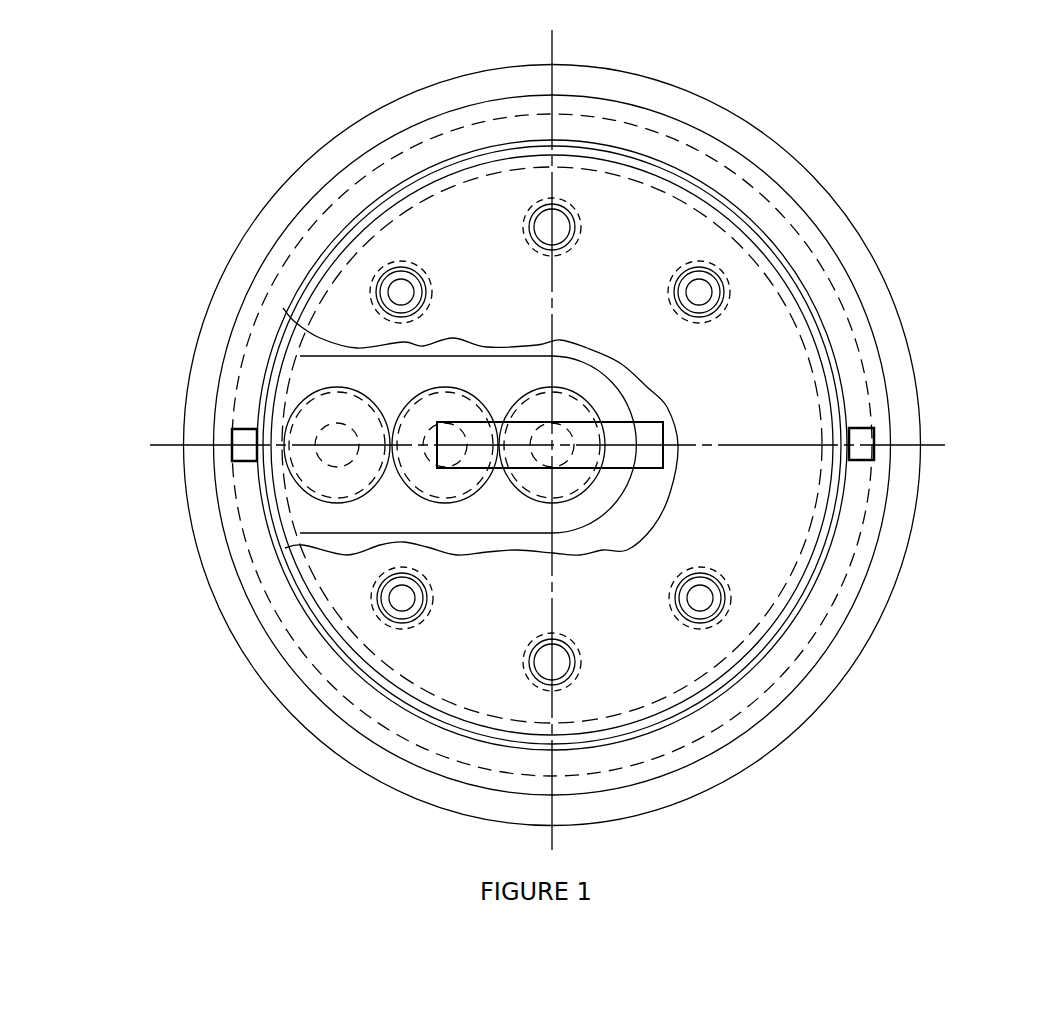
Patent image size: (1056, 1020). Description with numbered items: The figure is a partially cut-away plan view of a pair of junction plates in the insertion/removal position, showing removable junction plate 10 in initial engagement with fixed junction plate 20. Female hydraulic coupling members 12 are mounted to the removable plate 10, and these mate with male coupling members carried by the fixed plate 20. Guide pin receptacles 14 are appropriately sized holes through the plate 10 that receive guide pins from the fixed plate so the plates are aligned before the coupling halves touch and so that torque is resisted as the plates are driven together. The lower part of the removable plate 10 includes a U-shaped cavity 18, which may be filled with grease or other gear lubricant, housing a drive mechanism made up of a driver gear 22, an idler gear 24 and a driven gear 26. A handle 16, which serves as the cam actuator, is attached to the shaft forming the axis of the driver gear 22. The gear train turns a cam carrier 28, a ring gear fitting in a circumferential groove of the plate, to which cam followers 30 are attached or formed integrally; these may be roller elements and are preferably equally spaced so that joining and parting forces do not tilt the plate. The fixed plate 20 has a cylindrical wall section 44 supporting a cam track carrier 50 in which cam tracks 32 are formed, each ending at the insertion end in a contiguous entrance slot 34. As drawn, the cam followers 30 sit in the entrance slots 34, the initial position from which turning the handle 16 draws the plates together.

The removable junction plate 10 is at (792, 386).
The female hydraulic coupling members 12 is at (424, 290).
The guide pin receptacles 14 is at (575, 230).
The handle 16 is at (663, 436).
The U-shaped cavity 18 is at (595, 390).
The fixed junction plate 20 is at (900, 300).
The driver gear 22 is at (578, 501).
The idler gear 24 is at (462, 503).
The driven gear 26 is at (362, 499).
The cam carrier 28 is at (290, 516).
The cam followers 30 is at (245, 453).
The cam tracks 32 is at (650, 123).
The entrance slot 34 is at (232, 432).
The cylindrical wall section 44 is at (866, 264).
The cam track carrier 50 is at (800, 242).